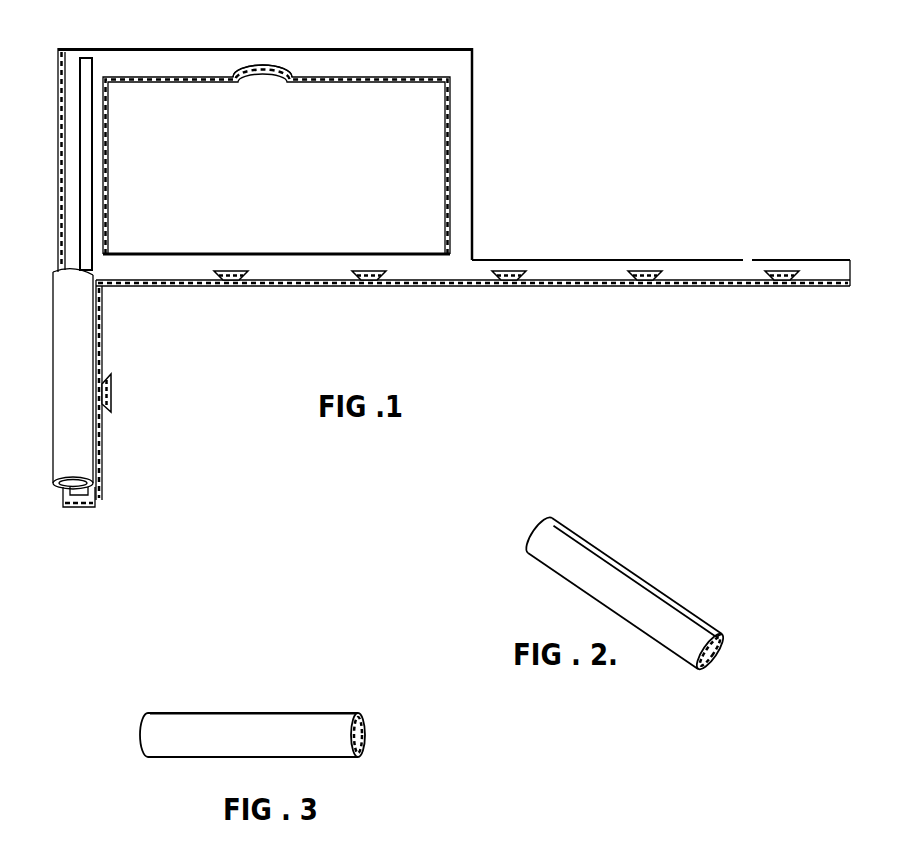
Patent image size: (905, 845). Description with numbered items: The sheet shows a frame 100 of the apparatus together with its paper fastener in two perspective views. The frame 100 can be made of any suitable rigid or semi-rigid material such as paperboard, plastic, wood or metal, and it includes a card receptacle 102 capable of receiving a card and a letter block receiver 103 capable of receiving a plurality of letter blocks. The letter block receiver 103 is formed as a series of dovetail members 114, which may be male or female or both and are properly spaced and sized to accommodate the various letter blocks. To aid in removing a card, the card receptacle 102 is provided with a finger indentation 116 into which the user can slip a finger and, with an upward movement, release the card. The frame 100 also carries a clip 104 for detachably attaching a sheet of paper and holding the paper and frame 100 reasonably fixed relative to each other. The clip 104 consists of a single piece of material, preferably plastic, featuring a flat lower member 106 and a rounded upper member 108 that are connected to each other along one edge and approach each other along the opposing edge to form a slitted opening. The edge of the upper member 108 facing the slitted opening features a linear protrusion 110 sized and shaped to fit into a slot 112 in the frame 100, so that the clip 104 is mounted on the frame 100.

In FIG. 1, the frame 100 is at (55, 74).
In FIG. 1, the card receptacle 102 is at (462, 150).
In FIG. 1, the letter block receiver 103 is at (690, 270).
In FIG. 1, the clip 104 is at (76, 450).
In FIG. 2, the clip 104 is at (534, 545).
In FIG. 3, the clip 104 is at (202, 713).
In FIG. 2, the flat lower member 106 is at (700, 616).
In FIG. 3, the flat lower member 106 is at (366, 740).
In FIG. 2, the rounded upper member 108 is at (612, 580).
In FIG. 3, the rounded upper member 108 is at (275, 720).
In FIG. 2, the linear protrusion 110 is at (722, 634).
In FIG. 3, the linear protrusion 110 is at (352, 718).
In FIG. 1, the slot 112 is at (95, 66).
In FIG. 1, the dovetail members 114 is at (232, 286).
In FIG. 1, the finger indentation 116 is at (276, 70).